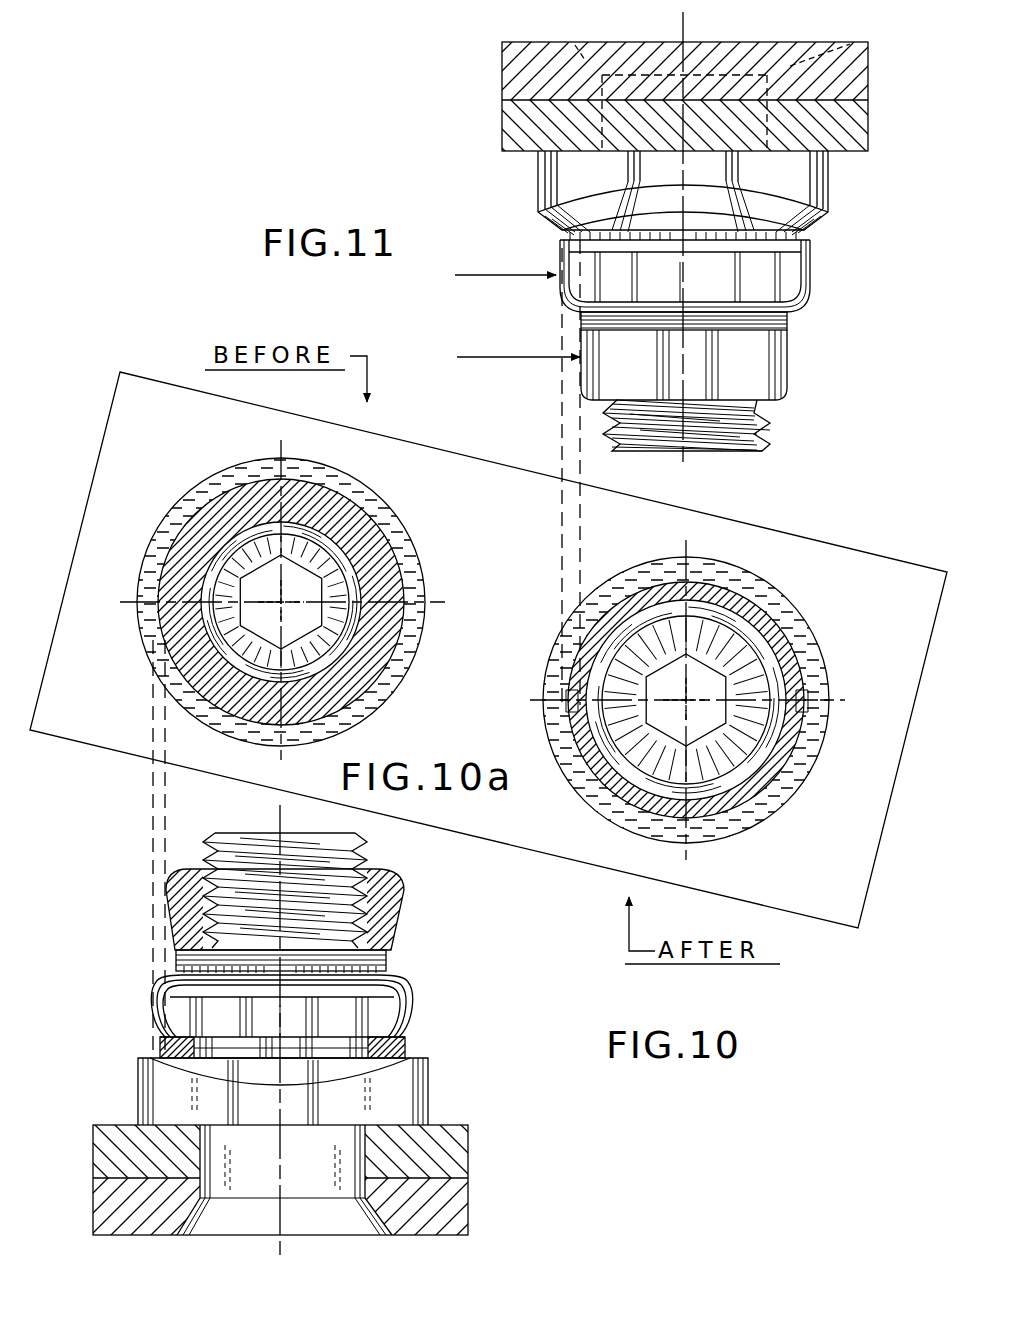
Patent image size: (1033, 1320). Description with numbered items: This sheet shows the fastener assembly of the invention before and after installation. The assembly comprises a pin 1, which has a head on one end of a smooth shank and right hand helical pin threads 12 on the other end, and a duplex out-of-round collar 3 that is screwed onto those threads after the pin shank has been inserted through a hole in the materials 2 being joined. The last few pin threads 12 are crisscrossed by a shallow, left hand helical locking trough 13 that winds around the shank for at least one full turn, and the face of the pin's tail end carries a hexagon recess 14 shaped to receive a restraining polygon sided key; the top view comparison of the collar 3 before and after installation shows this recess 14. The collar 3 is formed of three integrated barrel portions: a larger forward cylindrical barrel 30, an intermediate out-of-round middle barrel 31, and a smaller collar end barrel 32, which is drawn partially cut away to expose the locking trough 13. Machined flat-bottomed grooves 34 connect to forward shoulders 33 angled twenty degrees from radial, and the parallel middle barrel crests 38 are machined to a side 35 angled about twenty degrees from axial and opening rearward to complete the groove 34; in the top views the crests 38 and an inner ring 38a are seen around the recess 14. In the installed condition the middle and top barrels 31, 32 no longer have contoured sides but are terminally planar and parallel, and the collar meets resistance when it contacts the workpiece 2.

In FIG. 10, the pin 1 is at (302, 1150).
In FIG. 11, the materials 2 is at (512, 138).
In FIG. 10, the materials 2 is at (458, 1147).
In FIG. 11, the collar 3 is at (542, 296).
In FIG. 10, the collar 3 is at (422, 942).
In FIG. 11, the pin threads 12 is at (612, 434).
In FIG. 11, the locking trough 13 is at (722, 428).
In FIG. 10, the locking trough 13 is at (222, 903).
In FIG. 10A, the hexagon recess 14 is at (280, 602).
In FIG. 10, the hexagon recess 14 is at (646, 634).
In FIG. 11, the forward cylindrical barrel 30 is at (563, 207).
In FIG. 10, the forward cylindrical barrel 30 is at (147, 1082).
In FIG. 11, the middle barrel 31 is at (762, 290).
In FIG. 10, the middle barrel 31 is at (382, 1003).
In FIG. 11, the collar end barrel 32 is at (755, 372).
In FIG. 10, the collar end barrel 32 is at (386, 906).
In FIG. 10, the forward shoulder 33 is at (420, 1060).
In FIG. 10, the flat-bottomed groove 34 is at (176, 1046).
In FIG. 10, the machined side 35 is at (410, 1020).
In FIG. 10A, the middle barrel crests 38 is at (182, 605).
In FIG. 10, the middle barrel crests 38 is at (565, 695).
In FIG. 10A, the inner ring 38a is at (194, 622).
In FIG. 10, the inner ring 38a is at (215, 935).